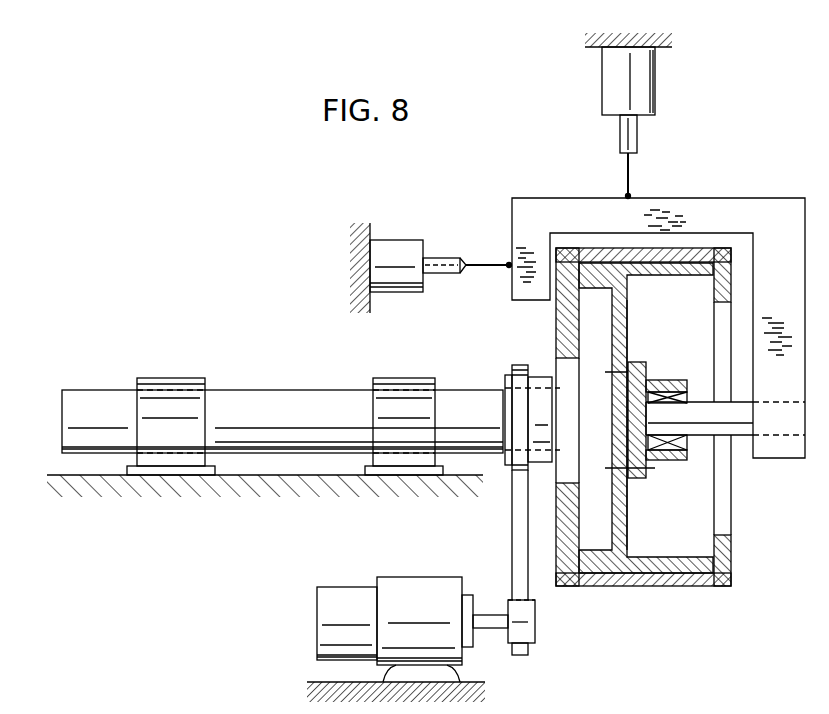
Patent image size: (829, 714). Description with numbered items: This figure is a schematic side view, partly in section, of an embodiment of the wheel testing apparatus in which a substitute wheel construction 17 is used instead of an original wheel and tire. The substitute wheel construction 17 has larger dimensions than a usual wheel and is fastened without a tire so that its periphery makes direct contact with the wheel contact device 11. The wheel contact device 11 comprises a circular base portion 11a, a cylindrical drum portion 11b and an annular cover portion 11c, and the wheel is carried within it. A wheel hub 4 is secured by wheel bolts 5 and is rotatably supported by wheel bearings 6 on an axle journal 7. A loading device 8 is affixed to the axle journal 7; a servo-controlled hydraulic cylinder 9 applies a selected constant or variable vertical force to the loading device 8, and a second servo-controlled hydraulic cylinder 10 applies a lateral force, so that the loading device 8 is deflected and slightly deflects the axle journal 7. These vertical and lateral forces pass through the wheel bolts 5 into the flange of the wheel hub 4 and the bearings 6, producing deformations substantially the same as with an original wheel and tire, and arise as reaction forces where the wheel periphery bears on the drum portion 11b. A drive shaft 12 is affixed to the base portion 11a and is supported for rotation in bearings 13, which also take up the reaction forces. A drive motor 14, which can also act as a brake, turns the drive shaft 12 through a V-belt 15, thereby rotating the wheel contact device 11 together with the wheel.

The wheel hub 4 is at (681, 380).
The wheel bolts 5 is at (650, 372).
The wheel bearings 6 is at (682, 461).
The axle journal 7 is at (741, 436).
The loading device 8 is at (721, 216).
The servo-controlled hydraulic cylinder 9 is at (644, 82).
The servo-controlled hydraulic cylinder 10 is at (400, 252).
The wheel contact device 11 is at (666, 262).
The circular base portion 11a is at (573, 583).
The cylindrical drum portion 11b is at (642, 584).
The annular cover portion 11c is at (729, 584).
The drive shaft 12 is at (320, 397).
The bearings 13 is at (183, 392).
The drive motor 14 is at (326, 605).
The V-belt 15 is at (509, 532).
The substitute wheel construction 17 is at (629, 523).